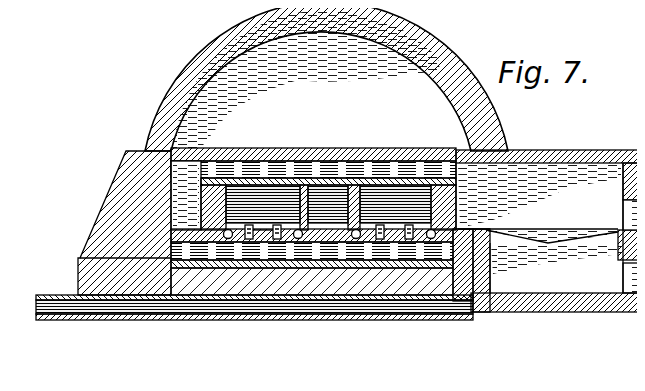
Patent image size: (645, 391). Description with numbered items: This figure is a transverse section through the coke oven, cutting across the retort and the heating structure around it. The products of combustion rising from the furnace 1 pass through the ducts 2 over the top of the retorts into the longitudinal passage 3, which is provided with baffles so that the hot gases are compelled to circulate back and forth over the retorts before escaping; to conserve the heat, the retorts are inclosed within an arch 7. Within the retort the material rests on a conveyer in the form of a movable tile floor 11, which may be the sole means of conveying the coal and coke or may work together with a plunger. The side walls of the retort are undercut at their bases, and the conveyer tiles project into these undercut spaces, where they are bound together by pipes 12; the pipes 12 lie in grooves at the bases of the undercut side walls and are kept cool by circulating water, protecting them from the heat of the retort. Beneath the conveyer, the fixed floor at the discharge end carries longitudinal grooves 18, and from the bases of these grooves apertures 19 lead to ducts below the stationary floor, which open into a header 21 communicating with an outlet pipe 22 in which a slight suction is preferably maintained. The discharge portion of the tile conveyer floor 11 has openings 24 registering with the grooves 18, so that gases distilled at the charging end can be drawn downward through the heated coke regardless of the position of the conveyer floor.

The furnace 1 is at (546, 231).
The ducts 2 is at (301, 163).
The longitudinal passage 3 is at (161, 179).
The arch 7 is at (424, 53).
The movable tile floor 11 is at (376, 231).
The pipes 12 is at (348, 231).
The longitudinal grooves 18 is at (239, 231).
The apertures 19 is at (253, 227).
The header 21 is at (471, 242).
The outlet pipe 22 is at (123, 303).
The openings 24 is at (264, 226).